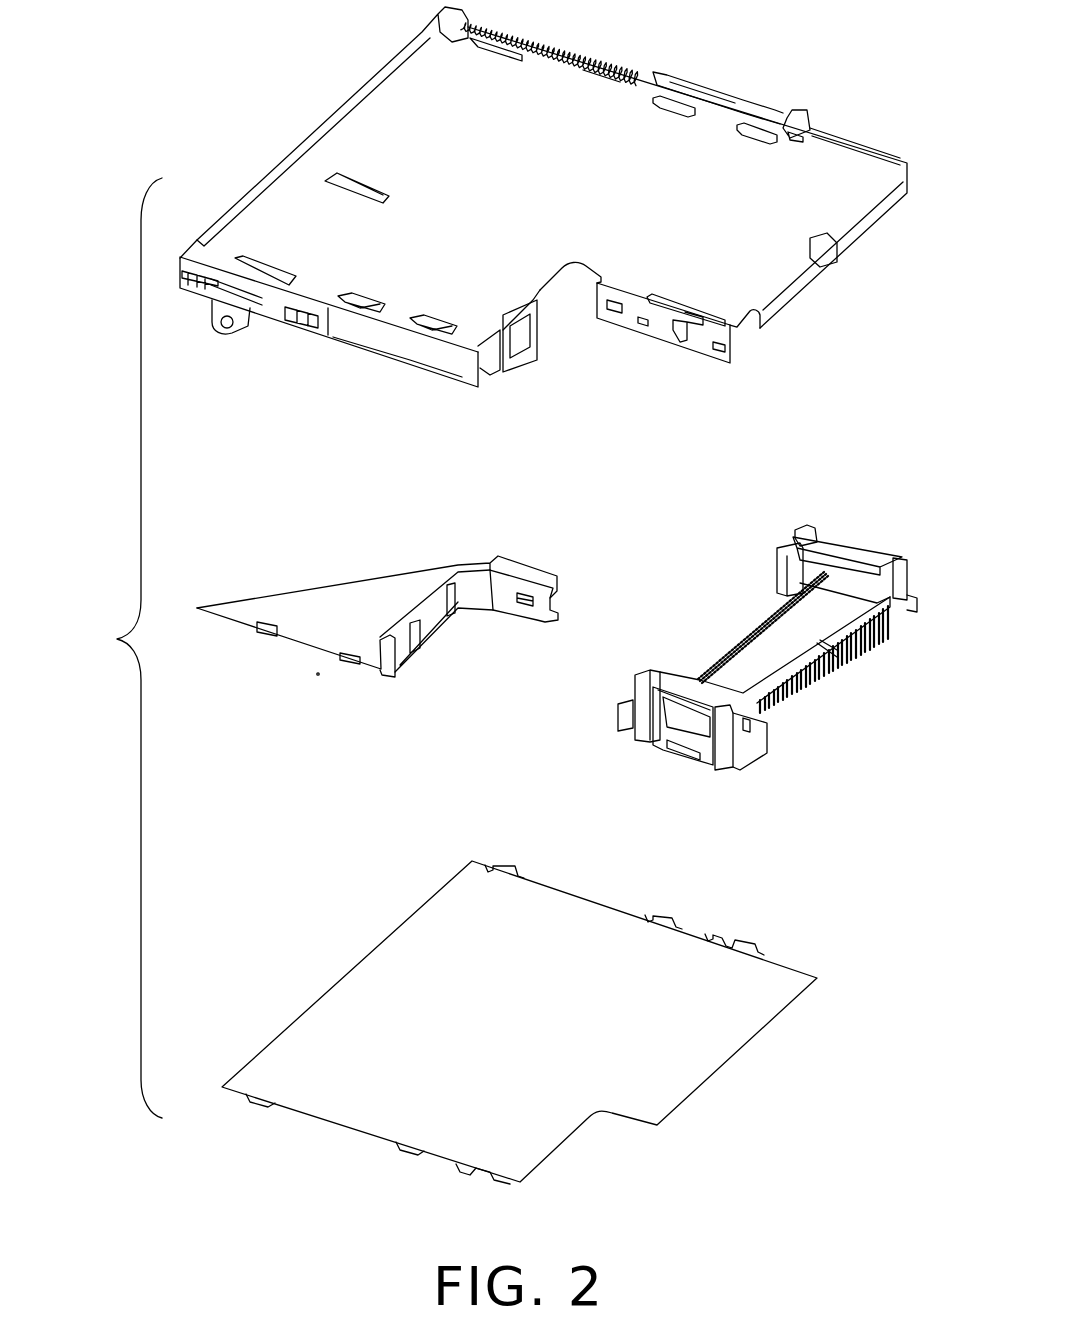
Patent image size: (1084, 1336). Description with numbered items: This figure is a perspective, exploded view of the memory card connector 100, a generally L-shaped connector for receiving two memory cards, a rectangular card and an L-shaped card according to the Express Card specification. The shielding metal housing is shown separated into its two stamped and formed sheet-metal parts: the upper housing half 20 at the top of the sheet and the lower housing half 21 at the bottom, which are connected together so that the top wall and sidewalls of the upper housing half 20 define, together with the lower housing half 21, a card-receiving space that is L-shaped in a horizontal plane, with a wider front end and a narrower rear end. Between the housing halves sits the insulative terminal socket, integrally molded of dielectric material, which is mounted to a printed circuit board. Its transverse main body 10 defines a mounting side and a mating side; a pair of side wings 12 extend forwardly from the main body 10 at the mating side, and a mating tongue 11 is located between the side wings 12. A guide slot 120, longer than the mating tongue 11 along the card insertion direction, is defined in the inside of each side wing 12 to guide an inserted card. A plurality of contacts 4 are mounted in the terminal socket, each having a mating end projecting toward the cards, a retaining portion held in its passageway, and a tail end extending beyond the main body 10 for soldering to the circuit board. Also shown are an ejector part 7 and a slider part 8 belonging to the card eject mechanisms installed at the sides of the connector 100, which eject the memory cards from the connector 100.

The memory card connector 100 is at (112, 648).
The upper housing half 20 is at (623, 143).
The ejector 7 is at (352, 610).
The transverse main body 10 is at (785, 642).
The guide slot 120 is at (790, 547).
The side wing 12 is at (818, 540).
The mating tongue 11 is at (775, 638).
The contact 4 is at (830, 693).
The slider 8 is at (663, 743).
The lower housing half 21 is at (690, 1055).